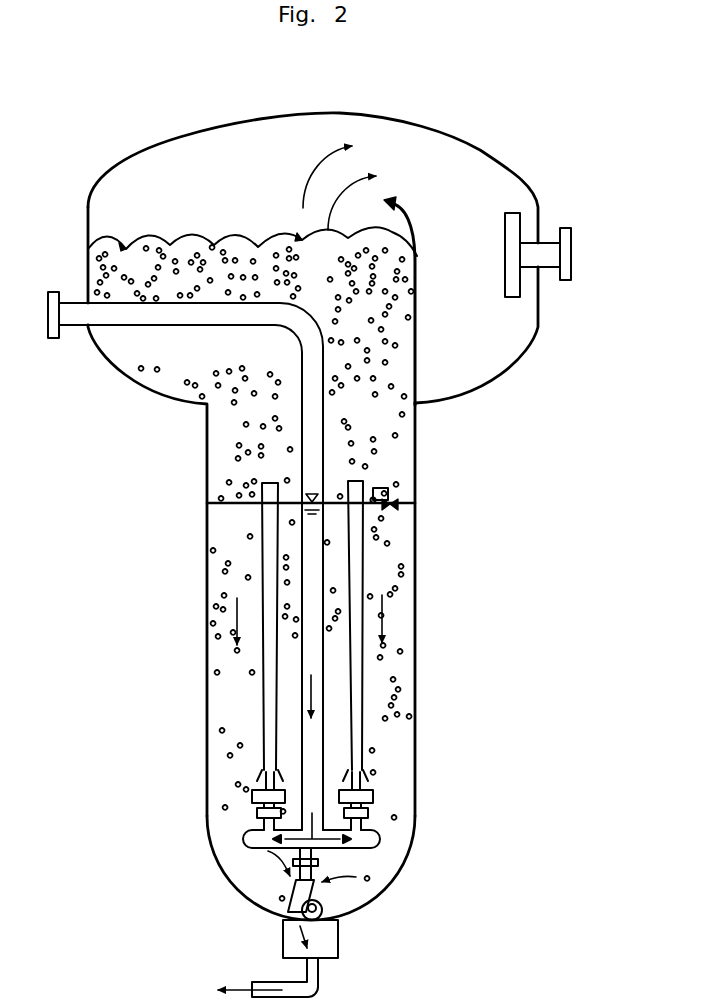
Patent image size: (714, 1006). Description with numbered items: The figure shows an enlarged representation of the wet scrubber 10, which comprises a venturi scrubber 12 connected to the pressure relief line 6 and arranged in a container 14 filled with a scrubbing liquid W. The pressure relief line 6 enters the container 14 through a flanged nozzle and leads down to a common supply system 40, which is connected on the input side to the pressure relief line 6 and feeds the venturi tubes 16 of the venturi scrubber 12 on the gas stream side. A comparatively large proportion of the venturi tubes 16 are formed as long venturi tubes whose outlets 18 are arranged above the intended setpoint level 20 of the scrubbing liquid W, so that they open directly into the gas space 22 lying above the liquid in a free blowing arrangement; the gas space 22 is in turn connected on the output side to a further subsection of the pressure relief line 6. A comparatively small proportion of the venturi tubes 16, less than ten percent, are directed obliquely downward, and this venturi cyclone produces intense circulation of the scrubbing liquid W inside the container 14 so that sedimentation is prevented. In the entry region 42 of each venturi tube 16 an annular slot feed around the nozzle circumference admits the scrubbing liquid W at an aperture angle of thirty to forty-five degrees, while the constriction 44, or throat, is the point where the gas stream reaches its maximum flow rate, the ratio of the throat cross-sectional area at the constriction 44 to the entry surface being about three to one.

The wet scrubber 10 is at (417, 127).
The gas space 22 is at (255, 145).
The pressure relief line 6 is at (74, 302).
The venturi tubes 16 is at (258, 516).
The setpoint level 20 is at (243, 502).
The venturi scrubber 12 is at (268, 735).
The constriction 44 is at (262, 768).
The entry region 42 is at (368, 777).
The common supply system 40 is at (380, 839).
The outlets 18 is at (352, 479).
The container 14 is at (416, 500).
The scrubbing liquid W is at (392, 704).